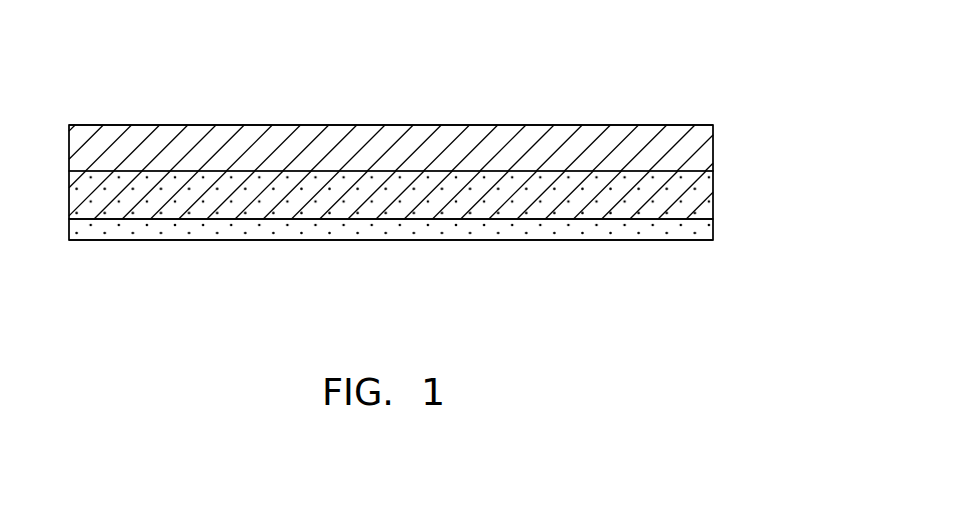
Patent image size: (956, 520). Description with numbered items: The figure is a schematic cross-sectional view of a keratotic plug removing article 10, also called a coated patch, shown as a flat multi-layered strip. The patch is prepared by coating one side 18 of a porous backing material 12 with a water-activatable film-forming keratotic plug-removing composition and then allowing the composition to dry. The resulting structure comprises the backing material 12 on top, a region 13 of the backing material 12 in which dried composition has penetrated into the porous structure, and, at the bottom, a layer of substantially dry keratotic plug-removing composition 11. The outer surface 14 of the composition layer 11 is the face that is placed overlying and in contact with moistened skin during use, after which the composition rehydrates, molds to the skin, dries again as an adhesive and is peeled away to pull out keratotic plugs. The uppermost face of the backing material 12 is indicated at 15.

The keratotic plug removing article 10 is at (716, 118).
The layer of substantially dry keratotic plug-removing composition 11 is at (708, 240).
The backing material 12 is at (698, 147).
The region of the backing material containing dried composition 13 is at (700, 197).
The keratotic plug-removing composition layer surface 14 is at (537, 242).
The top surface 15 is at (427, 125).
The one side of the backing material 18 is at (653, 220).